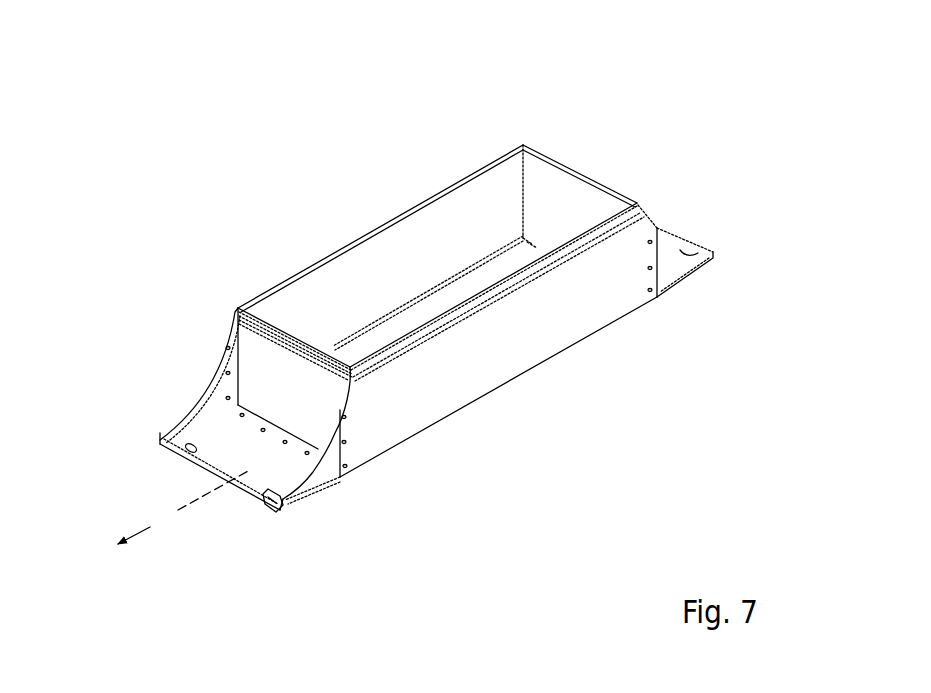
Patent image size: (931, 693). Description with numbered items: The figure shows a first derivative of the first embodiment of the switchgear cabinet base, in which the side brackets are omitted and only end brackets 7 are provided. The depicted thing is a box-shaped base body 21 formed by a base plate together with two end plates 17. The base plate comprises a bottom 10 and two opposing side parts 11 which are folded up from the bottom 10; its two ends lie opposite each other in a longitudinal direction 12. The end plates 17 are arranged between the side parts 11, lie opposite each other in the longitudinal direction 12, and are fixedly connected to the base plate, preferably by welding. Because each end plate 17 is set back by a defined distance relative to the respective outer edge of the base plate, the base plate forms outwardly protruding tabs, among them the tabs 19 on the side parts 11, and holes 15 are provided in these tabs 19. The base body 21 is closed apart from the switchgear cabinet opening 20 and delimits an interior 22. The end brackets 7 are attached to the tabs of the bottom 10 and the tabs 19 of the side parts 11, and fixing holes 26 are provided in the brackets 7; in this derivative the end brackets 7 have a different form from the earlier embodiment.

The base body 21 is at (300, 169).
The bottom 10 is at (513, 257).
The side parts 11 is at (402, 213).
The switchgear cabinet opening 20 is at (593, 205).
The end plates 17 is at (570, 173).
The interior 22 is at (335, 287).
The holes 15 is at (350, 433).
The tabs 19 is at (228, 338).
The end brackets 7 is at (207, 460).
The fixing holes 26 is at (263, 495).
The longitudinal direction 12 is at (140, 535).